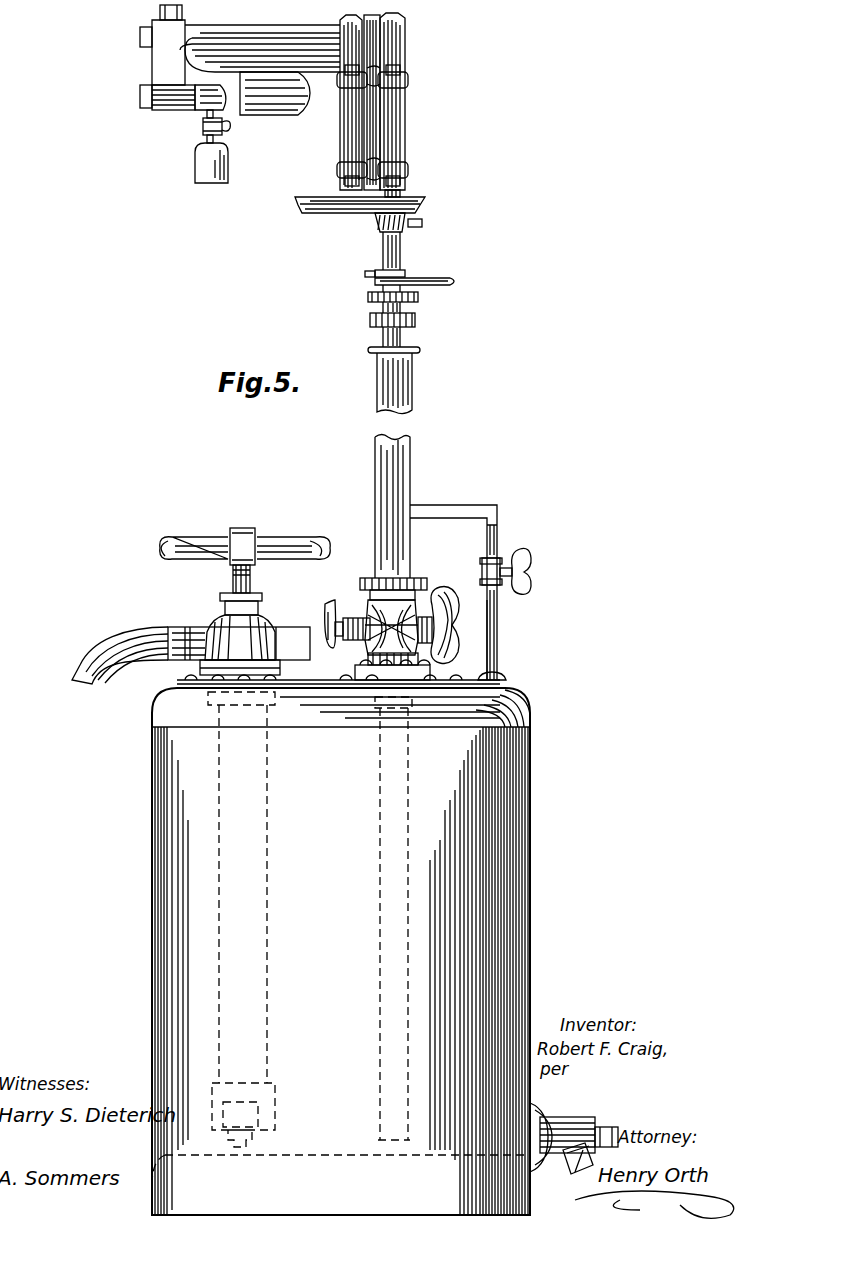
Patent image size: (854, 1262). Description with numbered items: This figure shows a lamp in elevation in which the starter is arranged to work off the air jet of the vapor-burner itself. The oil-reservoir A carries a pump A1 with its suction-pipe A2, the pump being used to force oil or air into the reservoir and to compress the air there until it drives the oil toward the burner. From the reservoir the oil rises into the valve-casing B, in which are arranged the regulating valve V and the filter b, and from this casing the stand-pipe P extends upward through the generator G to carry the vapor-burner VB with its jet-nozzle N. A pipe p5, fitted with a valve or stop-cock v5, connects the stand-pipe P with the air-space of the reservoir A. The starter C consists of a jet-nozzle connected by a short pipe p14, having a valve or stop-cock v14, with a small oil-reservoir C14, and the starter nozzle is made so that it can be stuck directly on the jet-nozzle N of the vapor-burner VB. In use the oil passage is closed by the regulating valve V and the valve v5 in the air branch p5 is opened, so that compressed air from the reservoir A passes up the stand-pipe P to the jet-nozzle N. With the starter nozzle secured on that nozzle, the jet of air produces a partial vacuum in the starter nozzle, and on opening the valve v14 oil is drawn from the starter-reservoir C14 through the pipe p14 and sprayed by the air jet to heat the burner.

The oil-reservoir A is at (385, 945).
The pump A1 is at (233, 582).
The suction-pipe A2 is at (191, 656).
The valve-casing B is at (392, 558).
The filter b is at (444, 624).
The valve V is at (328, 612).
The pipe p5 is at (458, 592).
The valve or stop-cock v5 is at (515, 571).
The stand-pipe P is at (380, 395).
The gas cylinders G is at (406, 46).
The vapor-burner VB is at (406, 118).
The jet-nozzle N is at (158, 110).
The starter C is at (202, 115).
The oil-reservoir of starter C14 is at (222, 97).
The valve or stop-cock v14 is at (228, 128).
The short pipe p14 is at (206, 138).